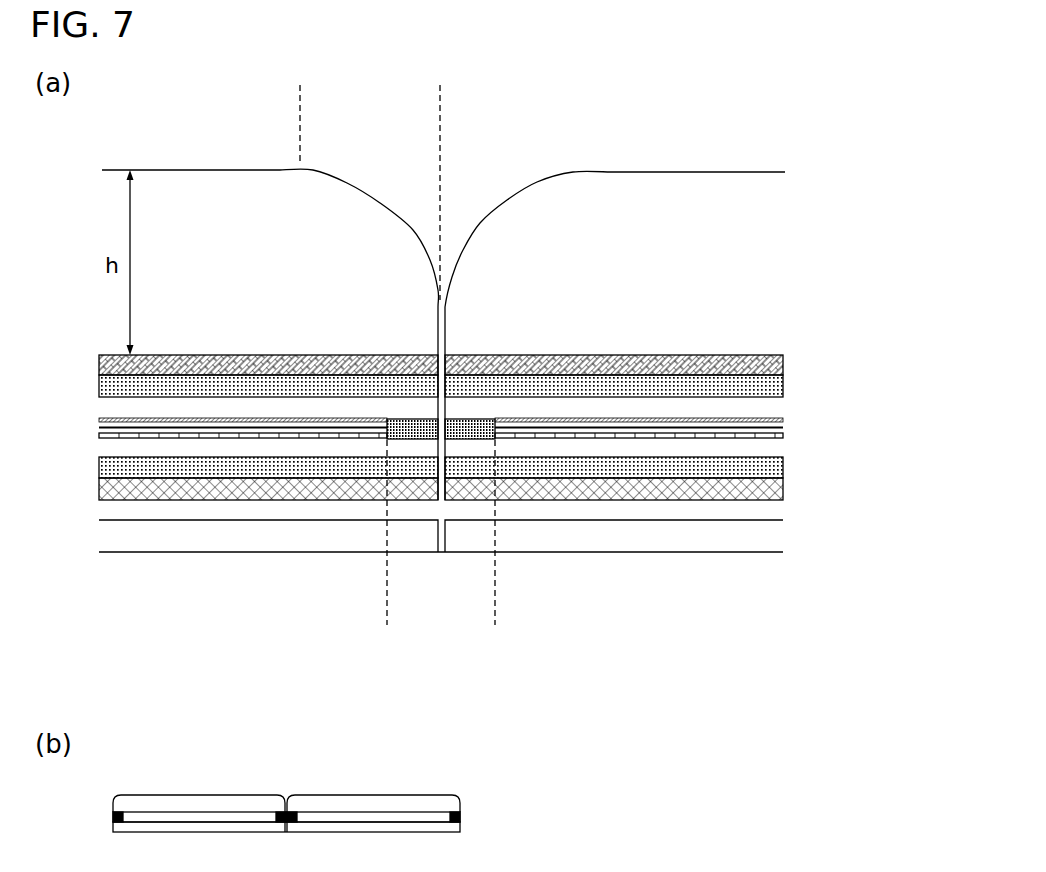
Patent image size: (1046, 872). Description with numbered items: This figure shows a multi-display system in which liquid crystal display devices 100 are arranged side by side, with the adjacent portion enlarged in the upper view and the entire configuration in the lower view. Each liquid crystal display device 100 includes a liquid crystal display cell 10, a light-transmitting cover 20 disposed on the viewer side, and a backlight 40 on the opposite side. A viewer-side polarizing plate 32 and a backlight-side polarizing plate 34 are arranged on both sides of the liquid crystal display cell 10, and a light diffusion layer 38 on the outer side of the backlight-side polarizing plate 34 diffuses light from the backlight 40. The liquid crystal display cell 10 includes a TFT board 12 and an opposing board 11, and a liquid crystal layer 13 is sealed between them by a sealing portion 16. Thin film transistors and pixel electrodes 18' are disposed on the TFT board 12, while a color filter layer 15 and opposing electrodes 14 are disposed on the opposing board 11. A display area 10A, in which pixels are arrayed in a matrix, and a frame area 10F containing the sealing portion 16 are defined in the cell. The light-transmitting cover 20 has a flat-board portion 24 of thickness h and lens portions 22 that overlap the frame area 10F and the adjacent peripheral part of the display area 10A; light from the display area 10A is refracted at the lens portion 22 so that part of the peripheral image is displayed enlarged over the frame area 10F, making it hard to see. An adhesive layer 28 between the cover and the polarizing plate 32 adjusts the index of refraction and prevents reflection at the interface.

The light-transmitting cover 20 is at (738, 224).
The flat-board portion 24 is at (290, 117).
The lens portion 22 is at (310, 117).
The adhesive layer 28 is at (785, 361).
The viewer-side polarizing plate 32 is at (785, 388).
The opposing board 11 is at (767, 410).
The liquid crystal display cell 10 is at (883, 393).
The TFT board 12 is at (767, 450).
The backlight-side polarizing plate 34 is at (785, 471).
The light diffusion layer 38 is at (785, 495).
The backlight 40 is at (767, 540).
The color filter layer 15 is at (107, 420).
The opposing electrodes 14 is at (100, 425).
The liquid crystal layer 13 is at (103, 430).
The pixel electrodes 18' is at (207, 462).
The sealing portion 16 is at (473, 430).
The display area 10A is at (378, 605).
The frame area 10F is at (398, 605).
The liquid crystal display device 100 is at (190, 785).